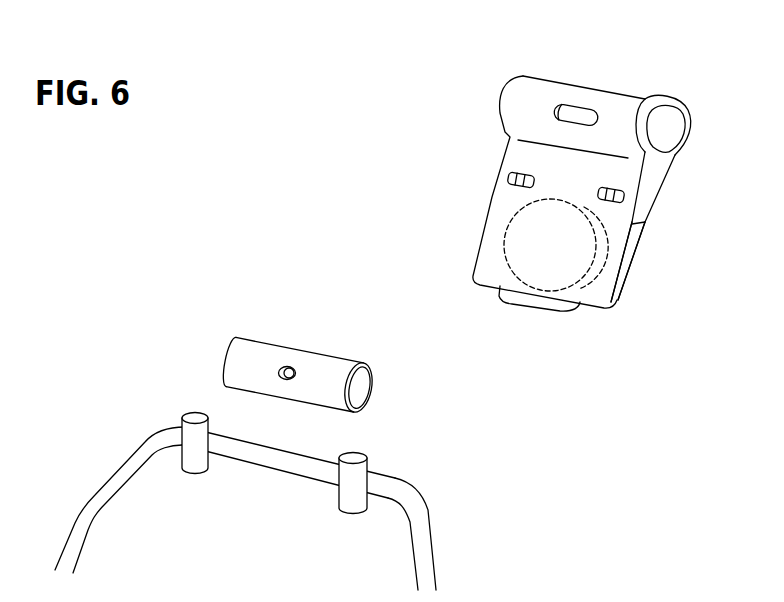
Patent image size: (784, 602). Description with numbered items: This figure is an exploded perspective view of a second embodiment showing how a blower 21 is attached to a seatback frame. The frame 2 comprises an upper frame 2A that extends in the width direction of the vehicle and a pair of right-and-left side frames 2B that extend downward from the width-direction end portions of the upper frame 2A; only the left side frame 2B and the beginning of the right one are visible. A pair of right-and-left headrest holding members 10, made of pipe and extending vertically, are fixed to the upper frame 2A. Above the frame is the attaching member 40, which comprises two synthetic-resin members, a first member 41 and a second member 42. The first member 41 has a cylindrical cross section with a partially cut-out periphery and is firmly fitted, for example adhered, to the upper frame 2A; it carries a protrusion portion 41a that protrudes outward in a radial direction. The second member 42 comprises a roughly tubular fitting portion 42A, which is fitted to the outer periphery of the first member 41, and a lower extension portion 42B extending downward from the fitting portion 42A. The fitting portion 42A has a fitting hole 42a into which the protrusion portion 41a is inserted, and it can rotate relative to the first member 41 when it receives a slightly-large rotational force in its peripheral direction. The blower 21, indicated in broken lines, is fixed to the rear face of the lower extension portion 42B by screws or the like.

The upper frame 2 is at (427, 567).
The upper frame 2A is at (277, 462).
The side frame 2B is at (82, 522).
The headrest holding member 10 is at (192, 469).
The blower 21 is at (548, 262).
The attaching member 40 is at (253, 350).
The first member 41 is at (298, 355).
The protrusion portion 41a is at (288, 366).
The second member 42 is at (658, 227).
The fitting hole 42a is at (577, 110).
The fitting portion 42A is at (690, 113).
The lower extension portion 42B is at (617, 258).